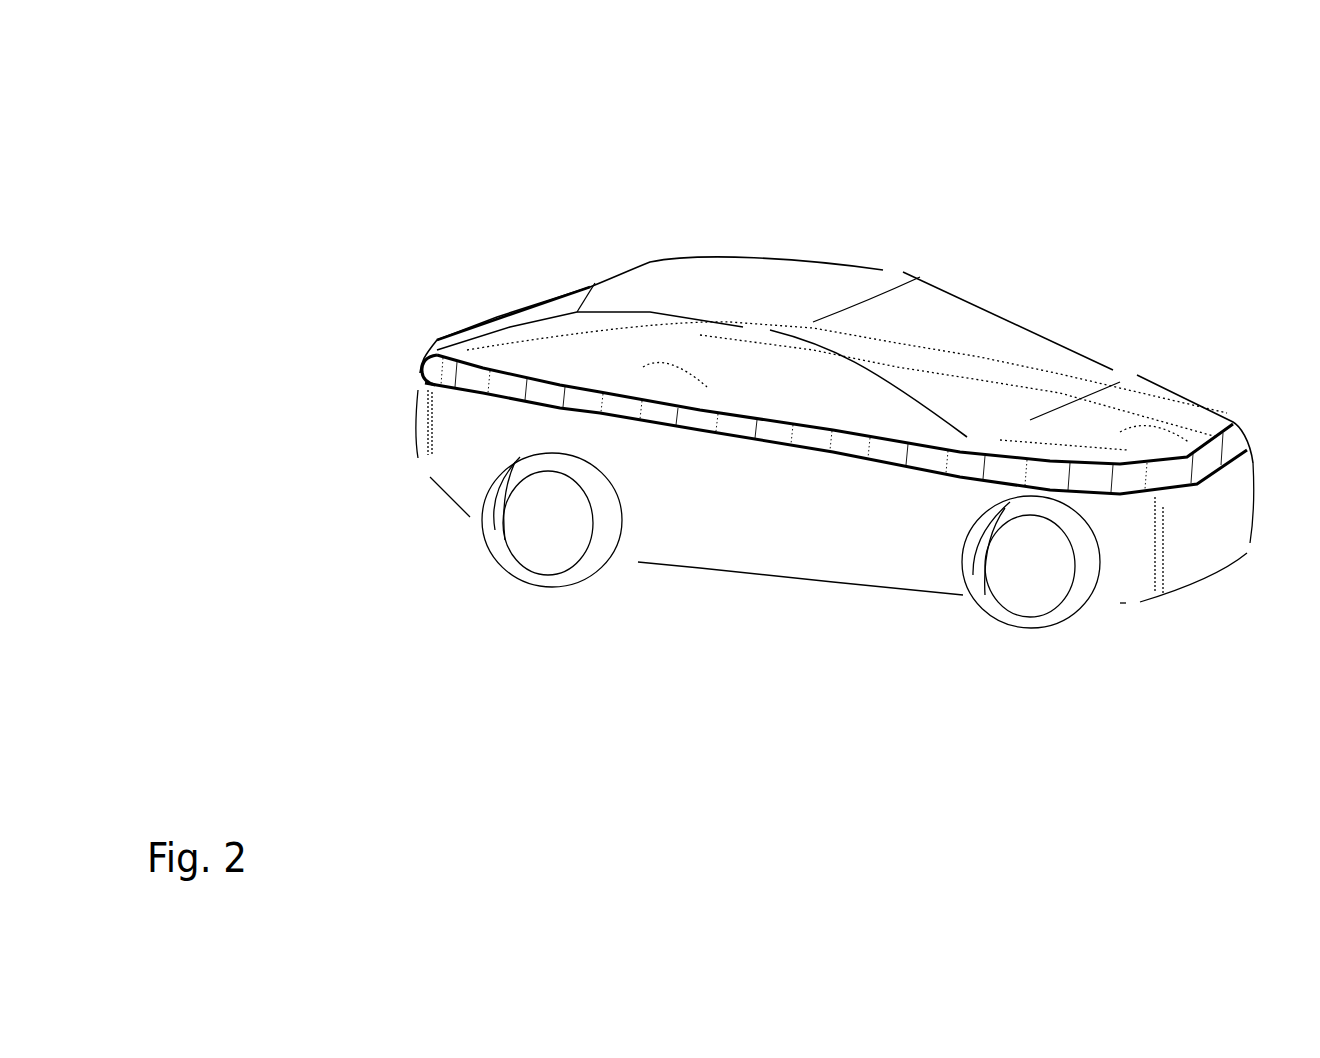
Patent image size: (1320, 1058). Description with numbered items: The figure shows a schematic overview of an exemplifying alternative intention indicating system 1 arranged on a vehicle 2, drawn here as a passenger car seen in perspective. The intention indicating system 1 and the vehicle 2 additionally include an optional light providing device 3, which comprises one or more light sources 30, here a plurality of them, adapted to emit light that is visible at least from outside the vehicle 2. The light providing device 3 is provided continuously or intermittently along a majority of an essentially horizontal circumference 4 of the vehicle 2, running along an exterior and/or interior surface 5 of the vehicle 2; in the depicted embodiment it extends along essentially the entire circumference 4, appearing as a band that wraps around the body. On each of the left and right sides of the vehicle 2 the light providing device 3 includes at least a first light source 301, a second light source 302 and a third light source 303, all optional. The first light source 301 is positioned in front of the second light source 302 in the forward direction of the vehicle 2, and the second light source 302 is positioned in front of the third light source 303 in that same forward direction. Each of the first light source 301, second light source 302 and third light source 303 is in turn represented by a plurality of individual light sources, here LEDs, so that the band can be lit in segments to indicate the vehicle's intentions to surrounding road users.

The intention indicating system 1 is at (447, 183).
The vehicle 2 is at (1107, 200).
The light providing device 3 is at (892, 482).
The light sources 30 is at (771, 506).
The first light source 301 is at (847, 443).
The second light source 302 is at (660, 430).
The third light source 303 is at (505, 386).
The horizontal circumference 4 is at (463, 395).
The exterior and/or interior surface 5 is at (857, 558).